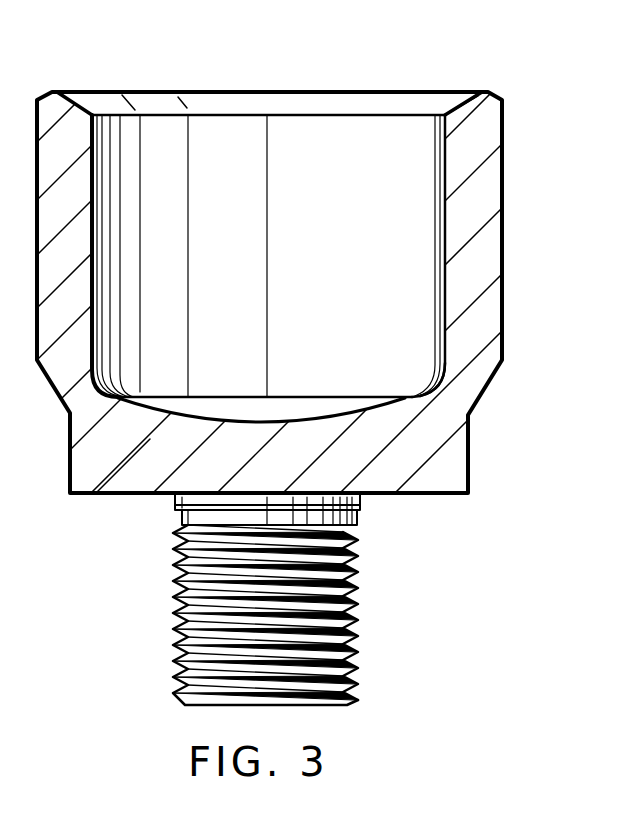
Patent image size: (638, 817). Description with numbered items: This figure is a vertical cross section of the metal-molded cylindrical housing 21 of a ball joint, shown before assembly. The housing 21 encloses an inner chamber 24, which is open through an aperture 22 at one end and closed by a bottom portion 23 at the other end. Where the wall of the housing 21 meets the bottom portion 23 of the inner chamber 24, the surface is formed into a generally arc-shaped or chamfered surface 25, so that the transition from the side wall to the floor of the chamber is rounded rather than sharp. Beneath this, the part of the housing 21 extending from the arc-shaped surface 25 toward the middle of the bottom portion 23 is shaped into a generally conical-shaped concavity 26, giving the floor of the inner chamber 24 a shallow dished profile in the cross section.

The housing 21 is at (483, 330).
The aperture 22 is at (336, 96).
The bottom portion 23 is at (360, 408).
The inner chamber 24 is at (420, 250).
The arc-shaped surface 25 is at (440, 380).
The conical-shaped concavity 26 is at (220, 423).